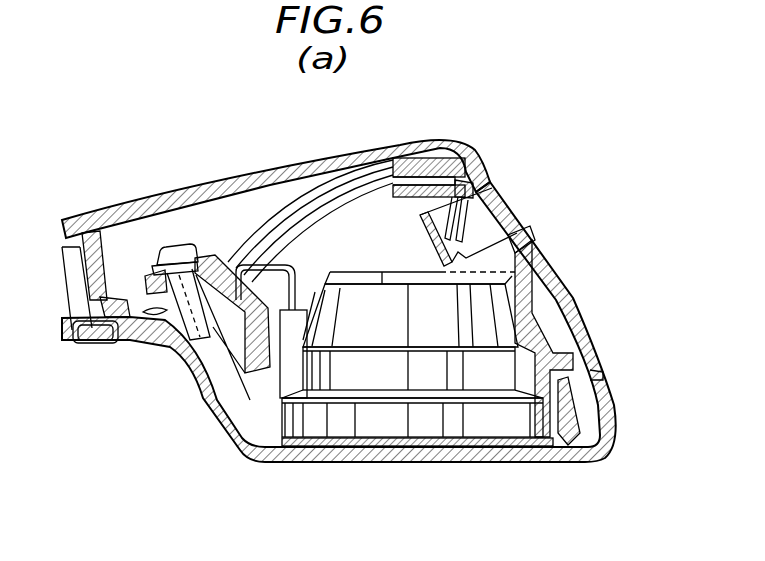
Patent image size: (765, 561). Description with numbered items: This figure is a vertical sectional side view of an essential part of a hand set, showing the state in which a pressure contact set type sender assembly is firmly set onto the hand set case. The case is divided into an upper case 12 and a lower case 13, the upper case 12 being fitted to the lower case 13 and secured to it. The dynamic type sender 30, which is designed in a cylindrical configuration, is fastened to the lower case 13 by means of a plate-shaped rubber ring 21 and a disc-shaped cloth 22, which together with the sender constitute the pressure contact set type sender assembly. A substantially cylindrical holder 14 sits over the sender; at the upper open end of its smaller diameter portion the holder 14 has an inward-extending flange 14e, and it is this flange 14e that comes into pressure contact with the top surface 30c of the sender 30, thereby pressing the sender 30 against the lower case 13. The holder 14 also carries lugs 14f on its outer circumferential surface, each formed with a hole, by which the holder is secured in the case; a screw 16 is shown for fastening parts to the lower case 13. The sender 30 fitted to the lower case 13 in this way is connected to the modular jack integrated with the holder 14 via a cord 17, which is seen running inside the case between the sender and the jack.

The upper case 12 is at (558, 272).
The lower case 13 is at (586, 464).
The holder 14 is at (533, 322).
The flange 14e is at (340, 272).
The lug 14f is at (250, 280).
The screw 16 is at (185, 246).
The cord 17 is at (270, 270).
The plate-shaped rubber ring 21 is at (300, 448).
The disc-shaped cloth 22 is at (358, 448).
The dynamic type sender 30 is at (450, 412).
The top surface 30c is at (368, 283).